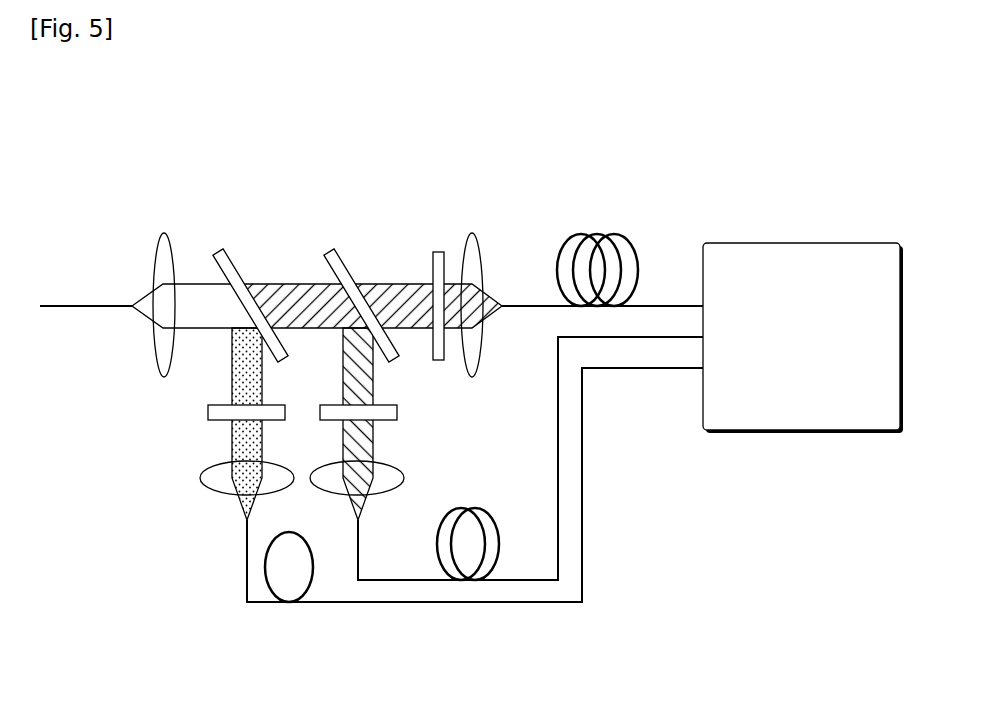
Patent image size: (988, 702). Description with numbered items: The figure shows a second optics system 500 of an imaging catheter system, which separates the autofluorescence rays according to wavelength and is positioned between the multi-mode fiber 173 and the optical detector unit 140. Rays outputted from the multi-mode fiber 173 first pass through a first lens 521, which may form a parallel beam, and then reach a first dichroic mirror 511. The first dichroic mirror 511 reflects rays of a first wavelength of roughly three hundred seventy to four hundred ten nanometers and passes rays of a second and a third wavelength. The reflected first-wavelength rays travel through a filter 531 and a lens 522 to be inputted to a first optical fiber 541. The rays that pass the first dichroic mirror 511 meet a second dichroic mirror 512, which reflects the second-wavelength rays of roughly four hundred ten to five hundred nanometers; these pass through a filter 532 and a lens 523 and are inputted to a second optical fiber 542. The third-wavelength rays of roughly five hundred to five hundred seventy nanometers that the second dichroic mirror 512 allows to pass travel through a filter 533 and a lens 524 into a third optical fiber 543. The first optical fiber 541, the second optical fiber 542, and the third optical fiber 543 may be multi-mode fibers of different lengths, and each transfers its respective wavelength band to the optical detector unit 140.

The second optics system 500 is at (490, 146).
The multi-mode fiber 173 is at (87, 305).
The first lens 521 is at (171, 242).
The first dichroic mirror 511 is at (228, 263).
The second dichroic mirror 512 is at (341, 262).
The filter 533 is at (440, 252).
The lens 524 is at (481, 242).
The filter 531 is at (208, 410).
The filter 532 is at (397, 410).
The lens 522 is at (200, 477).
The lens 523 is at (404, 477).
The first optical fiber 541 is at (500, 607).
The second optical fiber 542 is at (558, 440).
The third optical fiber 543 is at (656, 304).
The optical detector unit 140 is at (802, 243).